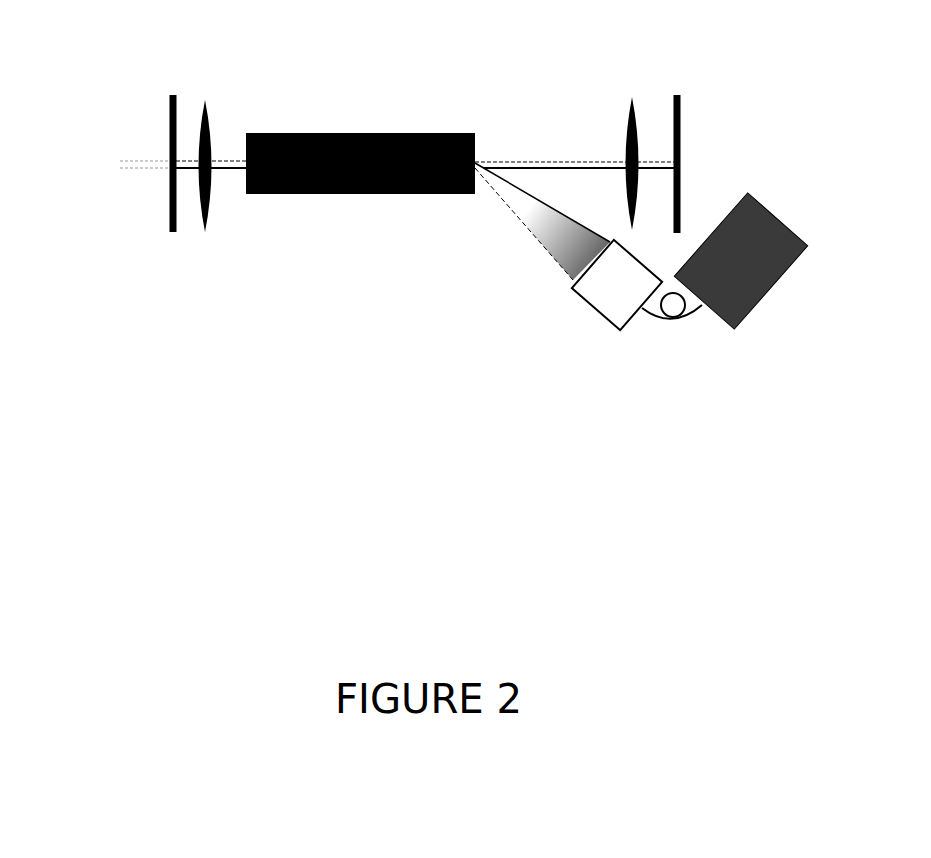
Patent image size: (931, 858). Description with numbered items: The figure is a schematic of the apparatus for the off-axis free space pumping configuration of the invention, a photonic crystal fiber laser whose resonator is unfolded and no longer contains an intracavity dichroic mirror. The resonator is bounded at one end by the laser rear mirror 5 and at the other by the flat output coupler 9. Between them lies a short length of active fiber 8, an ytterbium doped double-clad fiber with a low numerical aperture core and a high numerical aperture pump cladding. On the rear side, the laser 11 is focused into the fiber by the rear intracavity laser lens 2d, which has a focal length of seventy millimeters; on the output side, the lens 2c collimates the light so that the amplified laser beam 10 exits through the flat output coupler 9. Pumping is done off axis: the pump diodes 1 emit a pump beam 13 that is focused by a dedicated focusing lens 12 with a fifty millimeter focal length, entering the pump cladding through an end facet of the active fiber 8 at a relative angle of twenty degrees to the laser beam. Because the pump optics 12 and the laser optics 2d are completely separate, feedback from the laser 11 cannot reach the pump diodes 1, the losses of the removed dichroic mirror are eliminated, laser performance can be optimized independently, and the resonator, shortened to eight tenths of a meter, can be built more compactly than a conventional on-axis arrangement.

The pump diodes 1 is at (730, 327).
The lens 2c is at (205, 98).
The rear intracavity laser lens 2d is at (631, 96).
The laser rear mirror 5 is at (680, 107).
The active fiber 8 is at (440, 133).
The flat output coupler 9 is at (171, 242).
The amplified laser beam 10 is at (113, 172).
The laser 11 is at (573, 168).
The focusing lens for off-axis pump beam 12 is at (612, 320).
The pump beam 13 is at (523, 233).